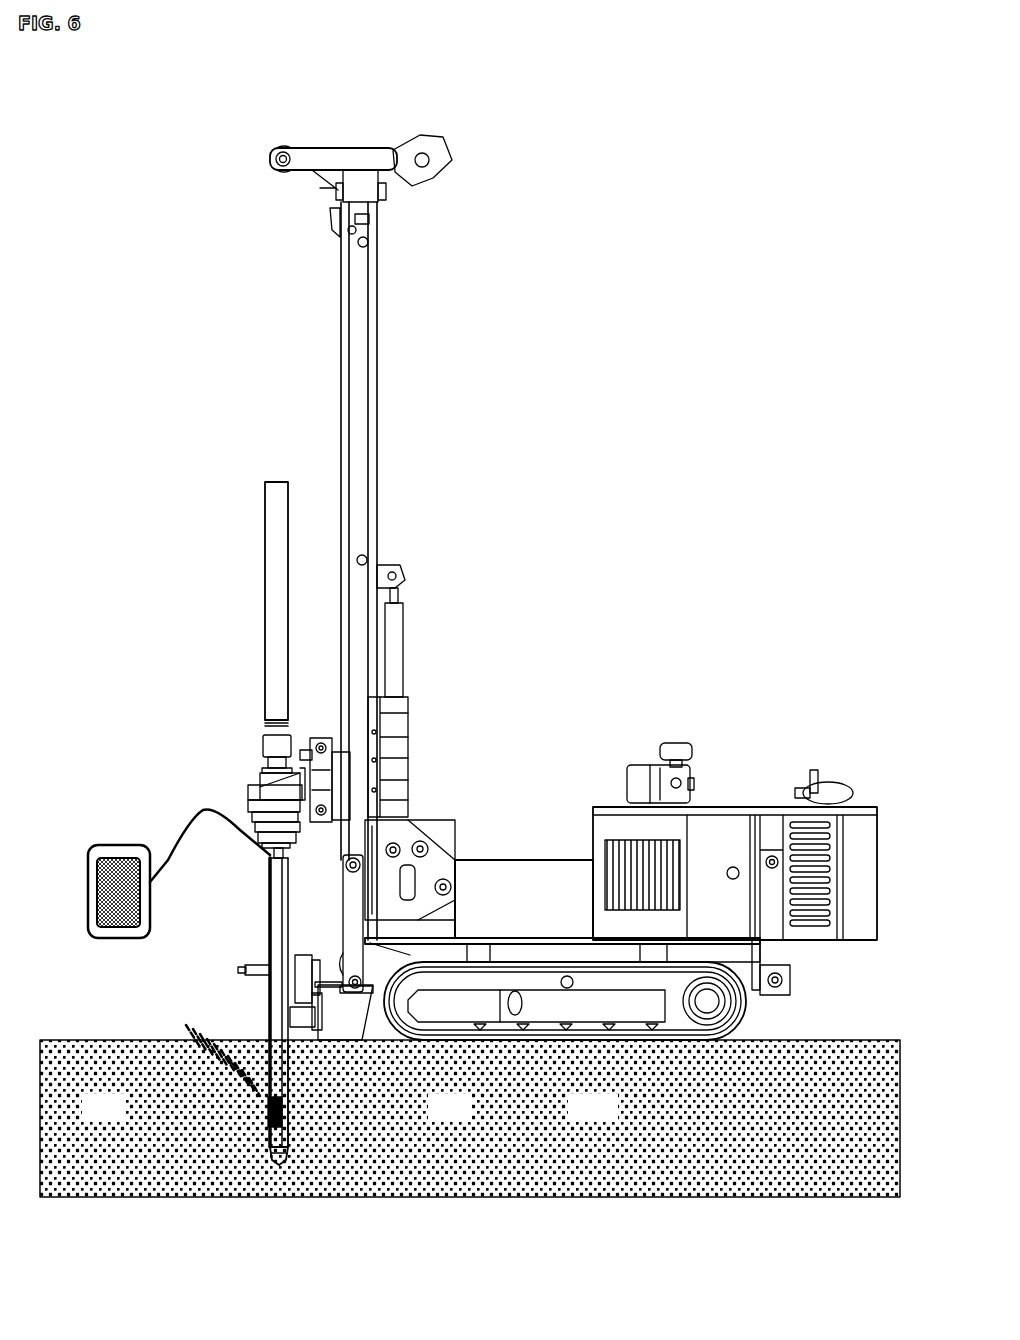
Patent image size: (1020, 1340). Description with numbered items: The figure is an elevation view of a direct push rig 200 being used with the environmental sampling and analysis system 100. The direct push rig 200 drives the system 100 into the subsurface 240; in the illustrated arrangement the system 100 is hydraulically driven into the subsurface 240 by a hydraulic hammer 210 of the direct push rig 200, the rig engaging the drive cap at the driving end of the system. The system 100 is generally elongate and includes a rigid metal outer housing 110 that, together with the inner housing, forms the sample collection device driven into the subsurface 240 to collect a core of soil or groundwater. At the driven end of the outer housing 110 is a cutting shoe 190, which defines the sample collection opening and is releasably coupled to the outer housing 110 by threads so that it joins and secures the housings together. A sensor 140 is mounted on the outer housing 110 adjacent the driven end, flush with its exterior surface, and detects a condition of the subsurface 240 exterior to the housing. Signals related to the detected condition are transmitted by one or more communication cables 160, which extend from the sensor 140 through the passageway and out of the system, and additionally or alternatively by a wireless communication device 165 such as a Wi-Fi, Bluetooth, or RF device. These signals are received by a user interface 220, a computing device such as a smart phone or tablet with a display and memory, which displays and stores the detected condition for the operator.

The environmental sampling and analysis system 100 is at (305, 1076).
The outer housing 110 is at (292, 1082).
The sensor 140 is at (270, 1120).
The communication cables 160 is at (196, 810).
The wireless communication device 165 is at (237, 1096).
The cutting shoe 190 is at (276, 1163).
The direct push rig 200 is at (662, 668).
The hydraulic hammer 210 is at (252, 607).
The user interface 220 is at (108, 828).
The subsurface 240 is at (470, 1118).